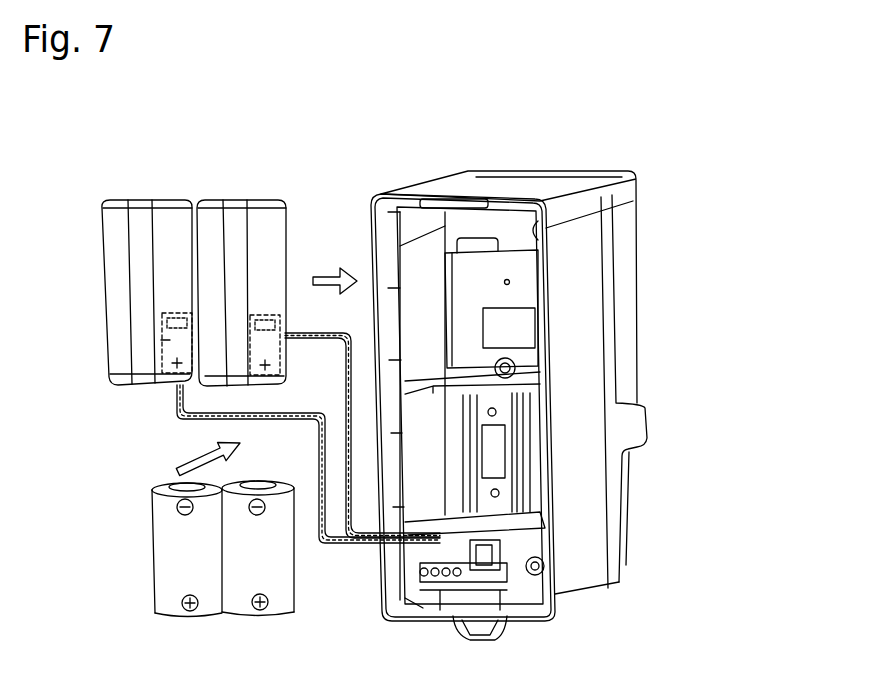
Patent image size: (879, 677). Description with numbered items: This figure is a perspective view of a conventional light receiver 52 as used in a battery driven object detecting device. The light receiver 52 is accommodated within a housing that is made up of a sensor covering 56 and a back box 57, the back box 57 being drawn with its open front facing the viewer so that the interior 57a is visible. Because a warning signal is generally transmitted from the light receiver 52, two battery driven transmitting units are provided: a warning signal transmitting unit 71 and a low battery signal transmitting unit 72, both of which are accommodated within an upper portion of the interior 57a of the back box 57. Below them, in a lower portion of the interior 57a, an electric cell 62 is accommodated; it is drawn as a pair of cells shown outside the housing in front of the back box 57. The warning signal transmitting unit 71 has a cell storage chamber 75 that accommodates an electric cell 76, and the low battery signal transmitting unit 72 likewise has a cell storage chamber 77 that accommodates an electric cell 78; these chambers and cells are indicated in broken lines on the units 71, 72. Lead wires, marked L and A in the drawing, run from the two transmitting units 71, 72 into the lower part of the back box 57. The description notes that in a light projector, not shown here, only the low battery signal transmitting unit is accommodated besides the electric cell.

The light receiver 52 is at (578, 140).
The sensor covering 56 is at (624, 327).
The back box 57 is at (574, 570).
The interior of the back box 57a is at (420, 258).
The warning signal transmitting unit 71 is at (157, 200).
The low battery signal transmitting unit 72 is at (243, 200).
The cell storage chamber 75 is at (168, 314).
The electric cell 76 is at (168, 338).
The cell storage chamber 77 is at (258, 315).
The electric cell 78 is at (277, 357).
The lead wire L is at (340, 368).
The lead wire A is at (313, 433).
The electric cell 62 is at (150, 540).